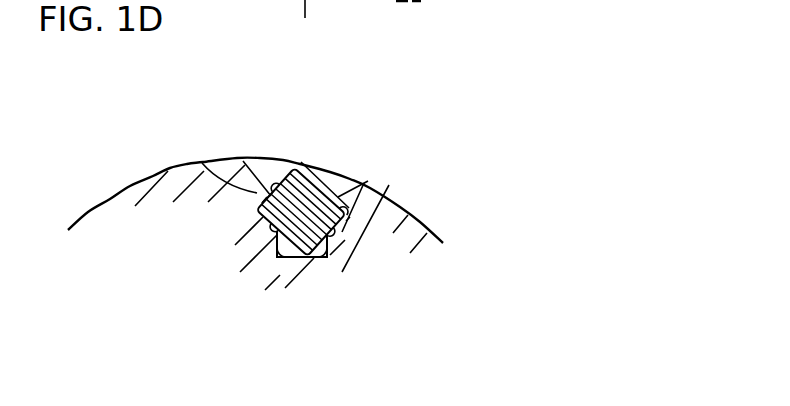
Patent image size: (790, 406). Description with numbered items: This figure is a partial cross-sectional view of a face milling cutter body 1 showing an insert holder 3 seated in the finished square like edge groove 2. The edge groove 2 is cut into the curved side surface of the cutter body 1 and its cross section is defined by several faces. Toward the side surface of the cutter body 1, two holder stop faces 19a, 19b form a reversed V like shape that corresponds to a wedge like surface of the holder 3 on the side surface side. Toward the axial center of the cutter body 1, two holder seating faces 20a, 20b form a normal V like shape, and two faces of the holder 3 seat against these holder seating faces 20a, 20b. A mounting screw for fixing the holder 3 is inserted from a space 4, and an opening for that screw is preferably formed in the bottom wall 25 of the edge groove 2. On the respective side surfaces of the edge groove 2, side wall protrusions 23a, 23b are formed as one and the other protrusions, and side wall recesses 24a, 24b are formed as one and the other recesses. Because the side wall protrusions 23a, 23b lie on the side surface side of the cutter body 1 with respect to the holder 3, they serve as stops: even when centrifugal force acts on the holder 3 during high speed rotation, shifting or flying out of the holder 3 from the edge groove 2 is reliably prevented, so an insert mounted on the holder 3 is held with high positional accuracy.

The cutter body 1 is at (112, 200).
The edge groove 2 is at (290, 258).
The holder 3 is at (309, 166).
The space 4 is at (338, 176).
The holder stop face 19a is at (287, 196).
The holder stop face 19b is at (341, 208).
The holder seating face 20a is at (271, 233).
The holder seating face 20b is at (327, 246).
The side wall protrusion 23a is at (202, 163).
The side wall protrusion 23b is at (350, 192).
The side wall recess 24a is at (267, 197).
The side wall recess 24b is at (350, 217).
The bottom wall 25 is at (322, 258).